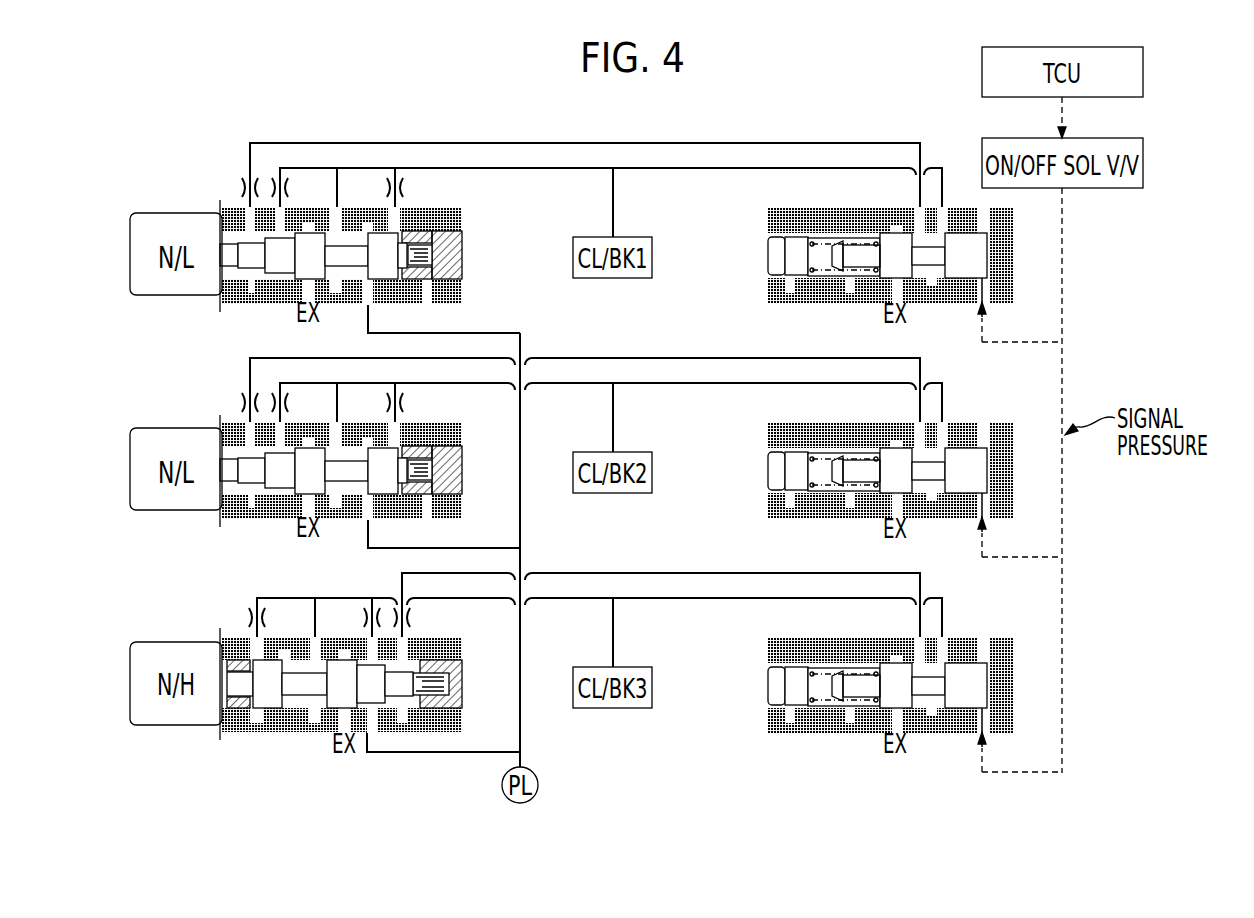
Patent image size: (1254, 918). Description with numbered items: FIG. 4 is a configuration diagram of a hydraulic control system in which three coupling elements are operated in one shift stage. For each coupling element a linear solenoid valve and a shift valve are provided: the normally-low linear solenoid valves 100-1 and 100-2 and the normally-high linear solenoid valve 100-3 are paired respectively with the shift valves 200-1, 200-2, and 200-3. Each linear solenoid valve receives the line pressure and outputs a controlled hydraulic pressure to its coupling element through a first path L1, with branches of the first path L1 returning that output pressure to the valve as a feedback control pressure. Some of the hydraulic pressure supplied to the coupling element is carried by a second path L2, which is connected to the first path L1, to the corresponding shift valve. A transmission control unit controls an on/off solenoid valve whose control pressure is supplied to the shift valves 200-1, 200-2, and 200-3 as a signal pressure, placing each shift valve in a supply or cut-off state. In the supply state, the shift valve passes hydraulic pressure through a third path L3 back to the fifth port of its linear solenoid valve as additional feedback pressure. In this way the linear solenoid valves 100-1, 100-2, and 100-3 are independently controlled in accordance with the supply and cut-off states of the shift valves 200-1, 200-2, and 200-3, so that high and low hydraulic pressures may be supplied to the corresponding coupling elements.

The linear solenoid valve (N/L) 100-1 is at (234, 306).
The linear solenoid valve (N/L) 100-2 is at (234, 521).
The linear solenoid valve (N/H) 100-3 is at (234, 736).
The shift valve 200-1 is at (809, 313).
The shift valve 200-2 is at (809, 528).
The shift valve 200-3 is at (809, 743).
The first path L1 is at (612, 178).
The second path L2 is at (702, 170).
The third path L3 is at (702, 143).